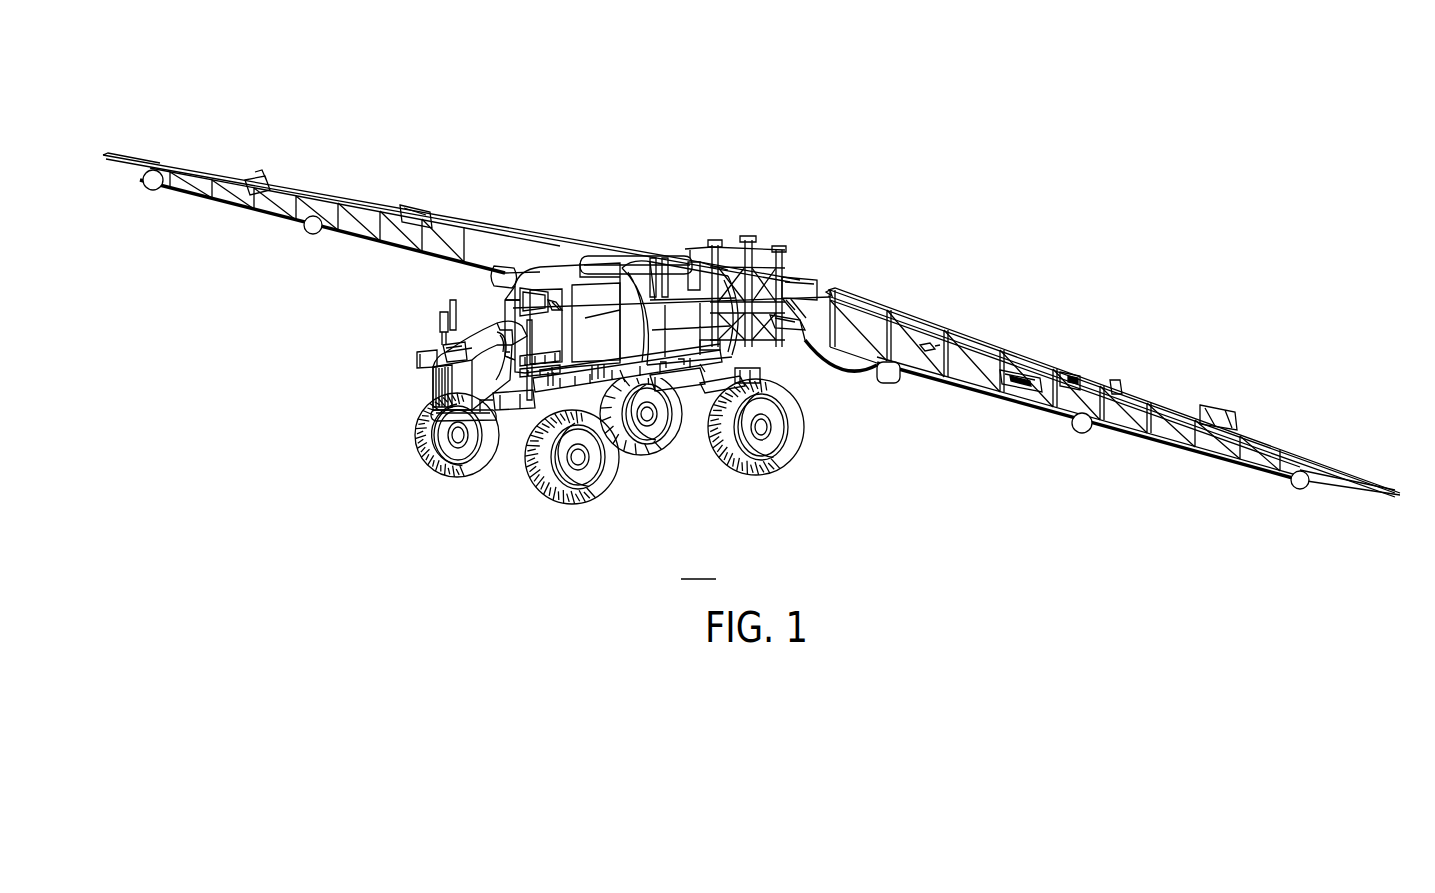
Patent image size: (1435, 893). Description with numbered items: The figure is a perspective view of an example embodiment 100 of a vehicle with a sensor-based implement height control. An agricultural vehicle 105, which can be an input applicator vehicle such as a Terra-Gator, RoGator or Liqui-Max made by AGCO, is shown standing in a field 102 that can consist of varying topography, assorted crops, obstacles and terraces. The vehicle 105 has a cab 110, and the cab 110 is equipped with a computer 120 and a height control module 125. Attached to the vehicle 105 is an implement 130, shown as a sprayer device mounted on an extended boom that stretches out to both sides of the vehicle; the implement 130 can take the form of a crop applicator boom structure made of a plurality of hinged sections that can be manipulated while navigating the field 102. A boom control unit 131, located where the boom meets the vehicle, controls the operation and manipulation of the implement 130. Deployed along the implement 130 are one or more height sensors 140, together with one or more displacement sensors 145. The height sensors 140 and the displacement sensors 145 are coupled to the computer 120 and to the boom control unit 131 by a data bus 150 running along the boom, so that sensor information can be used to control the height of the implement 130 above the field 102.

The example embodiment 100 is at (899, 120).
The field 102 is at (698, 568).
The agricultural vehicle 105 is at (502, 458).
The cab 110 is at (565, 256).
The computer 120 is at (520, 298).
The height control module 125 is at (522, 308).
The implement 130 is at (905, 312).
The boom control unit 131 is at (794, 284).
The height sensors 140 is at (153, 190).
The displacement sensors 145 is at (497, 280).
The data bus 150 is at (1000, 406).